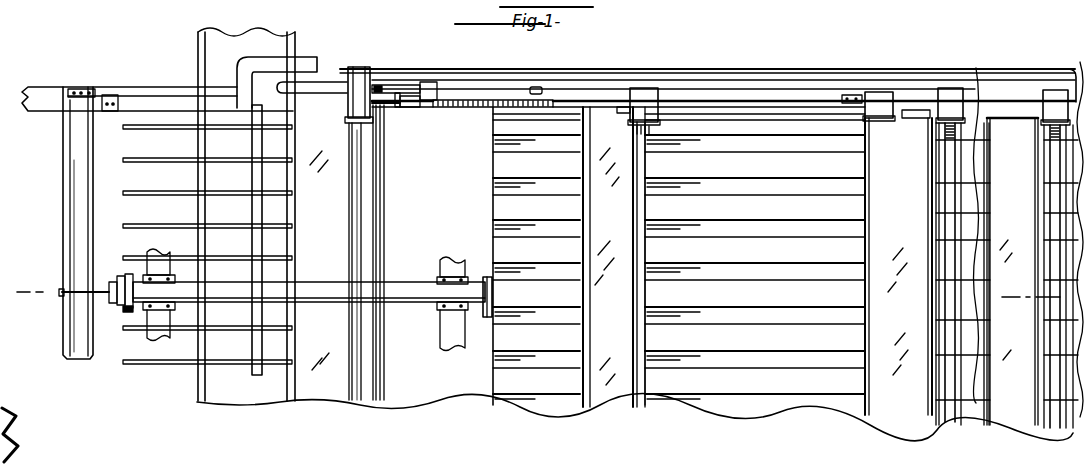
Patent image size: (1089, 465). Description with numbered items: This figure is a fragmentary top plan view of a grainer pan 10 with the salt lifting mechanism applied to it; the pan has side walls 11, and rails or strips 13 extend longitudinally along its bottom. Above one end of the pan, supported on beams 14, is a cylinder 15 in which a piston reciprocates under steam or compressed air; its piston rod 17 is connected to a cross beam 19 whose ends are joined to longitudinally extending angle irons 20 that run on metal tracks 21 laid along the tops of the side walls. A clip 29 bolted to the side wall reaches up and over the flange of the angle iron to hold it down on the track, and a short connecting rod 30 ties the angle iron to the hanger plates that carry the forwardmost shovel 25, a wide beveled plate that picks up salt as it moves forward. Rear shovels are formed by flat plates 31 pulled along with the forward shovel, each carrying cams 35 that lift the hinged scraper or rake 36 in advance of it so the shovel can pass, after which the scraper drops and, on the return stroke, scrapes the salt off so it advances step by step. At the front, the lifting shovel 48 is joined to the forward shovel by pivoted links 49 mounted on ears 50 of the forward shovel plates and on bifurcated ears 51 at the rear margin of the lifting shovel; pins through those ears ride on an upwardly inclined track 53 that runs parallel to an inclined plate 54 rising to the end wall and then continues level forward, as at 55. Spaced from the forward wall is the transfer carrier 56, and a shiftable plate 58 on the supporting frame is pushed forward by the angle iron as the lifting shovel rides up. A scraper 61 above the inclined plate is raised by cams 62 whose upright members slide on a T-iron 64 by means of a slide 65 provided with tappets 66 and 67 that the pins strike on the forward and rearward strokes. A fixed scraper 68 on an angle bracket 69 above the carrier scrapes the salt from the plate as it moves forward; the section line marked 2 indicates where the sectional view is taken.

The section line 2- 2 is at (536, 295).
The grainer pan 10 is at (797, 385).
The side walls 11 is at (390, 77).
The rails or strips 13 is at (750, 192).
The beams 14 is at (163, 258).
The cylinder 15 is at (331, 300).
The piston rod 17 is at (110, 303).
The cross beam 19 is at (63, 224).
The angle irons 20 is at (770, 97).
The metal tracks 21 is at (42, 90).
The shovel 25 is at (873, 295).
The clip 29 is at (536, 87).
The short connecting rod 30 is at (855, 110).
The flat plate 31 is at (1018, 213).
The cams 35 is at (1030, 115).
The scraper or rake 36 is at (946, 206).
The lifting shovel 48 is at (588, 340).
The pivoted links 49 is at (787, 112).
The ears 50 is at (912, 114).
The ears 51 is at (619, 110).
The upwardly inclined track 53 is at (482, 110).
The inclined plate 54 is at (438, 385).
The forward extension of track 55 is at (412, 106).
The transfer carrier 56 is at (255, 402).
The shiftable plate 58 is at (328, 396).
The scraper 61 is at (358, 220).
The cams 62 is at (397, 88).
The T-iron 64 is at (317, 97).
The slide 65 is at (433, 88).
The tappet 66 is at (438, 112).
The tappet 67 is at (402, 112).
The fixed scraper 68 is at (253, 208).
The angle bracket 69 is at (306, 55).